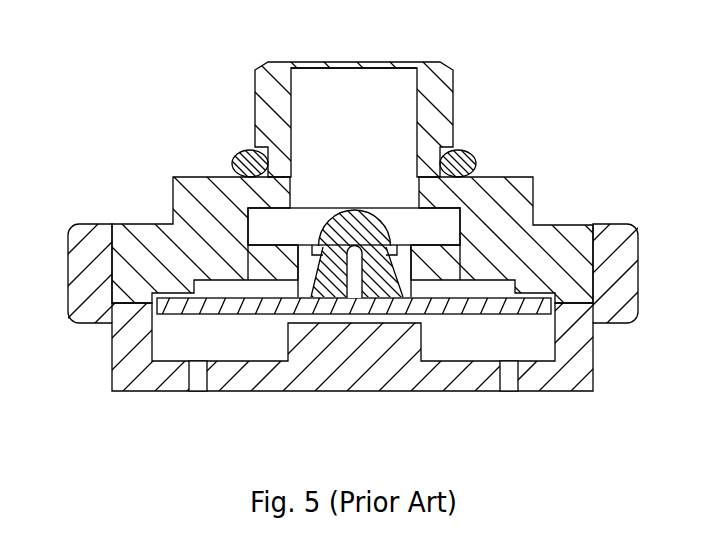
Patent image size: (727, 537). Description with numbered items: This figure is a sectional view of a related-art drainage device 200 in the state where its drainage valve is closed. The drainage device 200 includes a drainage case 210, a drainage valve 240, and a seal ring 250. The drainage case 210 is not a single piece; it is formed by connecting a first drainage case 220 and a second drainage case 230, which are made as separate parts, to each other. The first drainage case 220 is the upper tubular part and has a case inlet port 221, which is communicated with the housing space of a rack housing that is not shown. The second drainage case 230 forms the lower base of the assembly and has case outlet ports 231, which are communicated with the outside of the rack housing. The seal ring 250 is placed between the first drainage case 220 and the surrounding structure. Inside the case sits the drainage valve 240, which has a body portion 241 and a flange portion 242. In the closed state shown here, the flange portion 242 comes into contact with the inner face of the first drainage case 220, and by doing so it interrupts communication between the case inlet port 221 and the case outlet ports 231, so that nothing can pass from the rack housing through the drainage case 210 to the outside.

The drainage device 200 is at (240, 30).
The drainage case 210 is at (255, 75).
The first drainage case 220 is at (276, 117).
The case inlet port 221 is at (342, 82).
The seal ring 250 is at (463, 152).
The second drainage case 230 is at (112, 378).
The case outlet ports 231 is at (195, 392).
The drainage valve 240 is at (343, 209).
The body portion 241 is at (379, 263).
The flange portion 242 is at (490, 313).